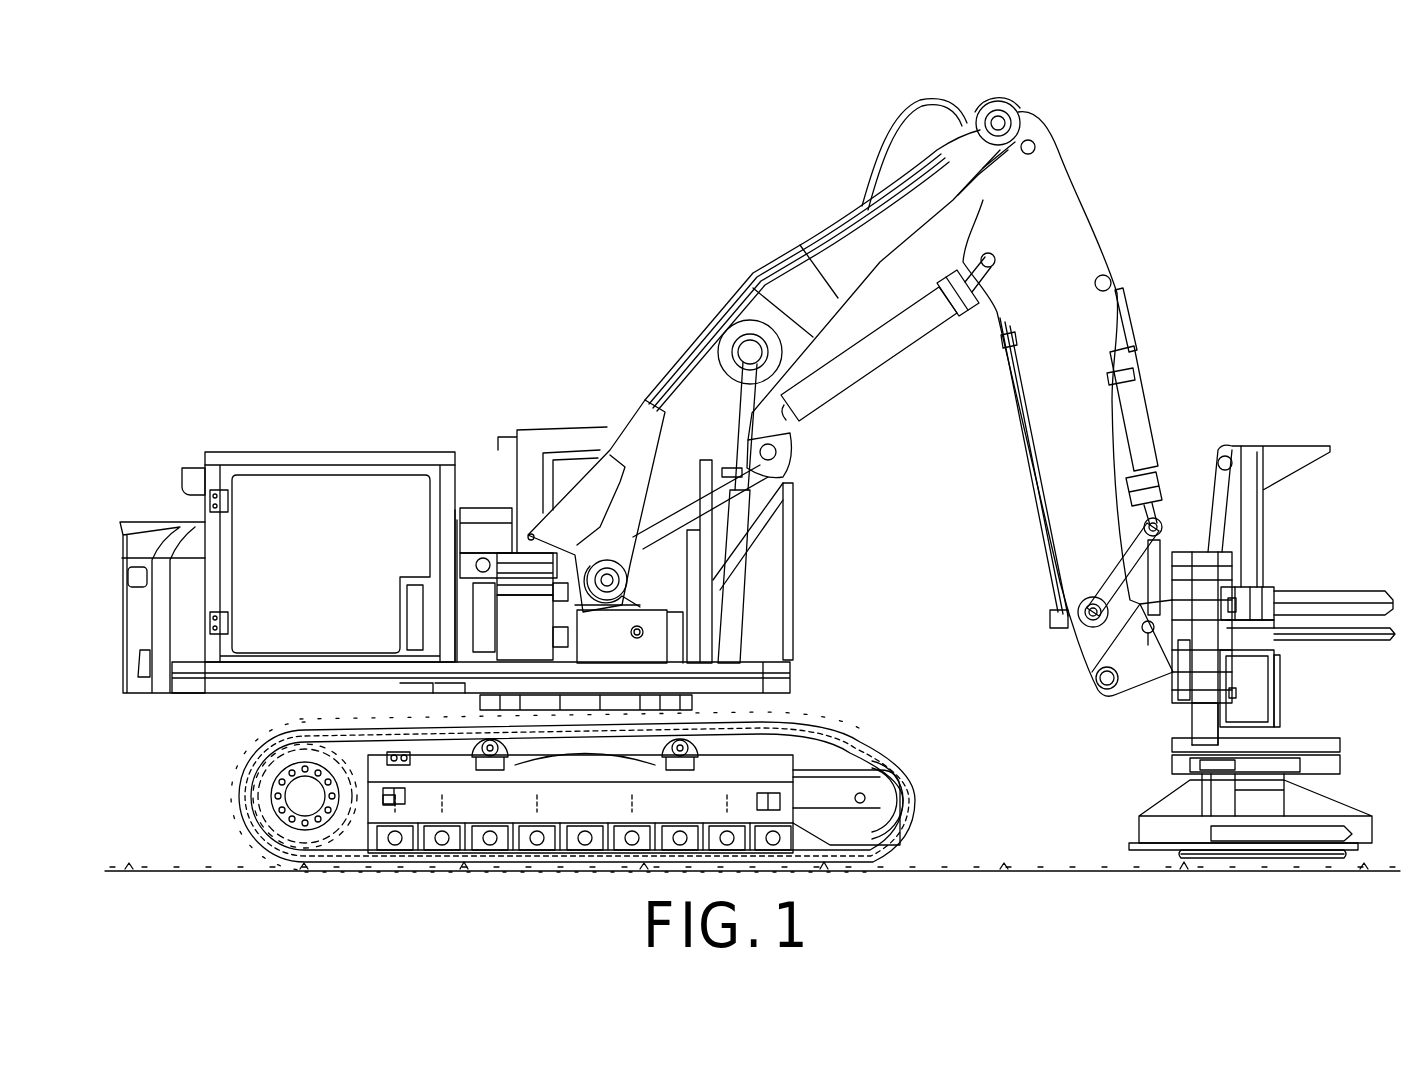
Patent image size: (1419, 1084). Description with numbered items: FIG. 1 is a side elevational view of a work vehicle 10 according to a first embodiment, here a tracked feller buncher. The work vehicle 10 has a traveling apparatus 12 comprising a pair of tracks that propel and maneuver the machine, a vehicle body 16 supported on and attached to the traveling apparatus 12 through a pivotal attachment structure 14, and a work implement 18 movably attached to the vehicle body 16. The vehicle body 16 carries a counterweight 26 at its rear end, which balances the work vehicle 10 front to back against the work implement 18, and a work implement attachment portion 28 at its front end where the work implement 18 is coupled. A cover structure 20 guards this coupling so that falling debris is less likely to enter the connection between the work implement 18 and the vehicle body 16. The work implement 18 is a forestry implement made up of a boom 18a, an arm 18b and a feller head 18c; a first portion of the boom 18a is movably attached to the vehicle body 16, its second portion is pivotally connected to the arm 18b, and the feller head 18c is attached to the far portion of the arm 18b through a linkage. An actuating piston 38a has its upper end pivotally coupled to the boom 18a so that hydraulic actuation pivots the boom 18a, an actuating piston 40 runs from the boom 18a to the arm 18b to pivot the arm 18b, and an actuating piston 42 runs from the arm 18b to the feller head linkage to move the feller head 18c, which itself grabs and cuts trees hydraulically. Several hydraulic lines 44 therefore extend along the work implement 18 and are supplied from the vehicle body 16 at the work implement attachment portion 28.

The work vehicle 10 is at (744, 465).
The traveling apparatus 12 is at (873, 720).
The pivotal attachment structure 14 is at (695, 705).
The vehicle body 16 is at (461, 443).
The work implement 18 is at (967, 458).
The boom 18a is at (812, 258).
The arm 18b is at (1082, 258).
The feller head 18c is at (1275, 577).
The cover structure 20 is at (612, 414).
The counterweight 26 is at (130, 627).
The work implement attachment portion 28 is at (641, 580).
The actuating piston 38a is at (722, 540).
The actuating piston 40 is at (850, 385).
The actuating piston 42 is at (1135, 443).
The hydraulic lines 44 is at (697, 343).